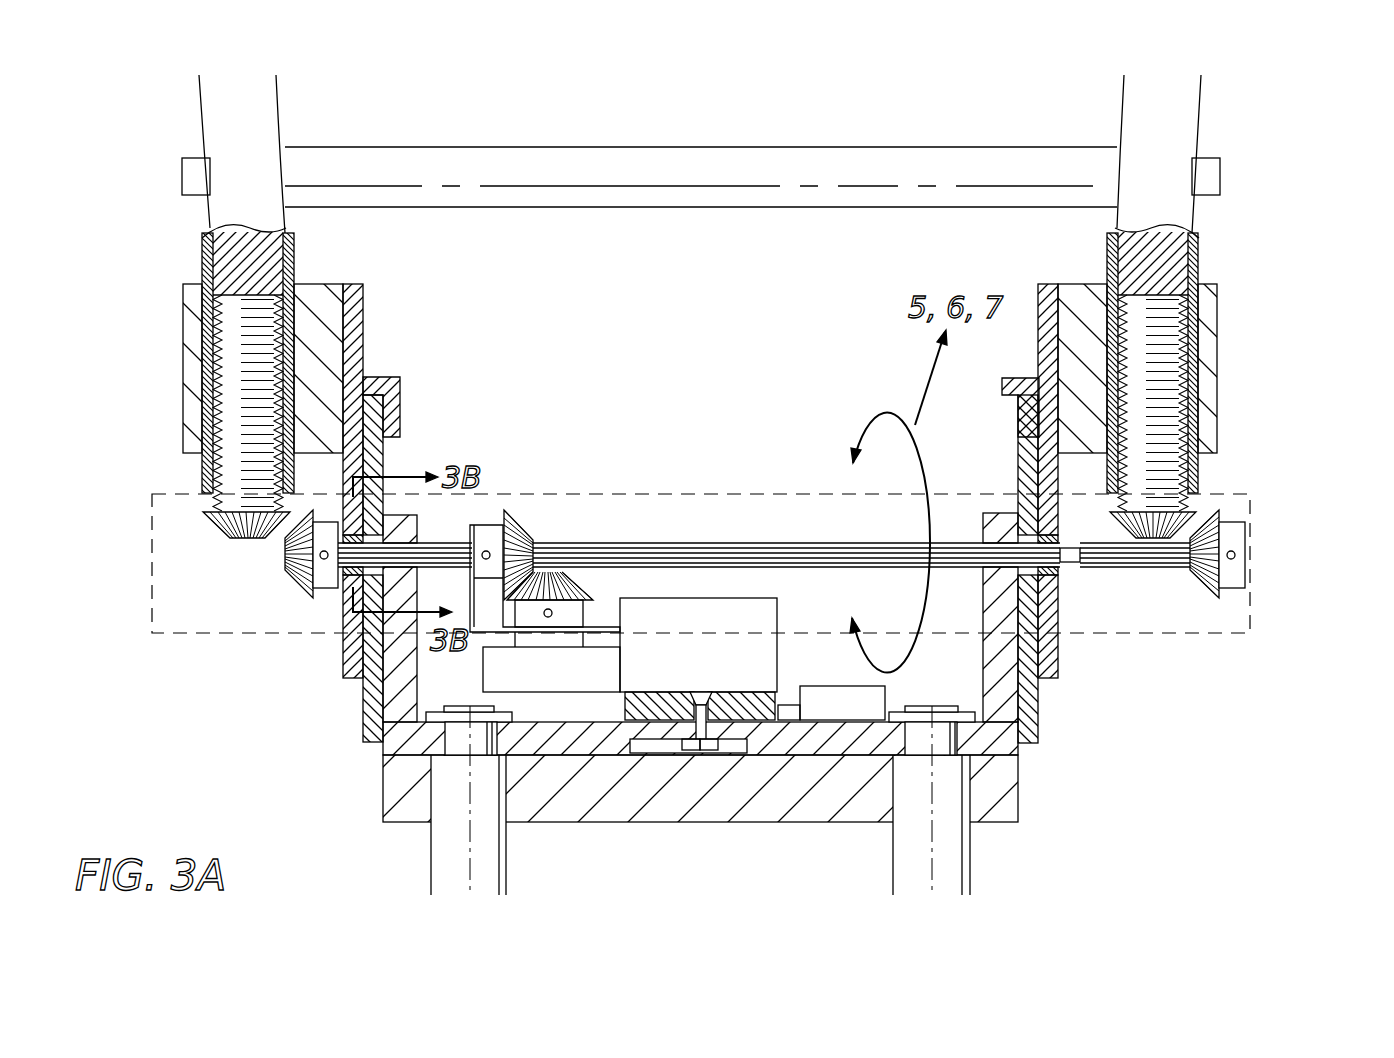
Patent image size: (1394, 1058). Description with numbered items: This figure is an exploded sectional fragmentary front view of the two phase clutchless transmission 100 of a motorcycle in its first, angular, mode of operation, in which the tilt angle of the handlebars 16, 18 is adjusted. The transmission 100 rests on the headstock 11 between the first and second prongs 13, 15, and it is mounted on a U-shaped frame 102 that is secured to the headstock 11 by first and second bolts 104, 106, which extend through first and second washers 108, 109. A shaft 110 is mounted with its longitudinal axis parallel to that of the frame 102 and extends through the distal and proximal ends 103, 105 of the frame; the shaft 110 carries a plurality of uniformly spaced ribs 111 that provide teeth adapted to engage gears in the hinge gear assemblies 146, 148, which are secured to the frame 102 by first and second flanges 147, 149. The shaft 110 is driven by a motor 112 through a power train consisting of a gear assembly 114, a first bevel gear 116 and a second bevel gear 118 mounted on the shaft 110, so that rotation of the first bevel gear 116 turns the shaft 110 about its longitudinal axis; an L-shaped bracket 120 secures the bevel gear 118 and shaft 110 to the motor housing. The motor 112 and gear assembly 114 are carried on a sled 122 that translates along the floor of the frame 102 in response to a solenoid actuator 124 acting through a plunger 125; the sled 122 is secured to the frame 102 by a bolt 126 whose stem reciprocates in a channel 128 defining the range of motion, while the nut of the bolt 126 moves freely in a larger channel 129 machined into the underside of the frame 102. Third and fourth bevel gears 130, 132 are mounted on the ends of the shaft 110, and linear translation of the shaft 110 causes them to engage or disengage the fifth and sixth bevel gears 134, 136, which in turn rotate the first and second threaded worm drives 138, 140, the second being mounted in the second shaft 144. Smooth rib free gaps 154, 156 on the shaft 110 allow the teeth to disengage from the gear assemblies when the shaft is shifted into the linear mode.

The headstock 11 is at (1018, 788).
The first prong 13 is at (431, 870).
The second prong 15 is at (970, 878).
The handlebar 16 is at (235, 217).
The handlebar 18 is at (1155, 208).
The two phase clutchless transmission 100 is at (1285, 174).
The U-shaped frame 102 is at (403, 743).
The distal end of frame 103 is at (445, 522).
The first bolt 104 is at (467, 706).
The proximal end of frame 105 is at (983, 528).
The second bolt 106 is at (937, 706).
The first washer 108 is at (512, 718).
The second washer 109 is at (962, 712).
The shaft 110 is at (764, 546).
The ribs 111 is at (800, 557).
The motor 112 is at (698, 645).
The gear assembly 114 is at (551, 669).
The first bevel gear 116 is at (588, 585).
The second bevel gear 118 is at (520, 522).
The L-shaped bracket 120 is at (472, 523).
The sled 122 is at (626, 712).
The solenoid actuator 124 is at (842, 703).
The plunger 125 is at (786, 705).
The bolt 126 is at (693, 748).
The channel 128 is at (670, 748).
The larger channel 129 is at (640, 748).
The third bevel gear 130 is at (297, 580).
The fourth bevel gear 132 is at (1200, 585).
The fifth bevel gear 134 is at (235, 527).
The sixth bevel gear 136 is at (1175, 527).
The first threaded worm drive 138 is at (240, 380).
The second threaded worm drive 140 is at (1168, 385).
The second shaft 144 is at (1200, 258).
The first hinge gear assembly 146 is at (365, 325).
The first flange 147 is at (382, 445).
The second hinge gear assembly 148 is at (1050, 290).
The second flange 149 is at (1018, 462).
The smooth rib free gap 154 is at (372, 550).
The smooth rib free gap 156 is at (1070, 557).